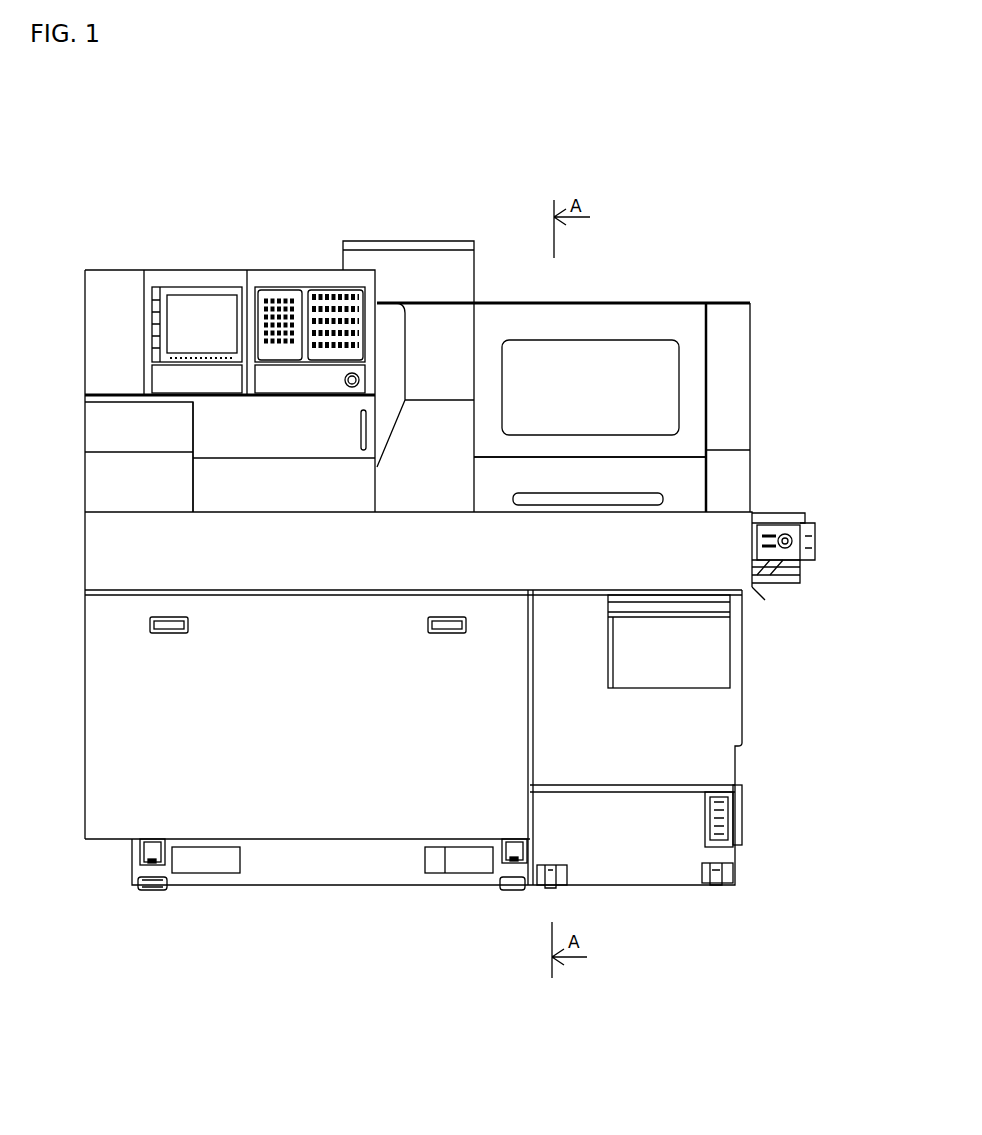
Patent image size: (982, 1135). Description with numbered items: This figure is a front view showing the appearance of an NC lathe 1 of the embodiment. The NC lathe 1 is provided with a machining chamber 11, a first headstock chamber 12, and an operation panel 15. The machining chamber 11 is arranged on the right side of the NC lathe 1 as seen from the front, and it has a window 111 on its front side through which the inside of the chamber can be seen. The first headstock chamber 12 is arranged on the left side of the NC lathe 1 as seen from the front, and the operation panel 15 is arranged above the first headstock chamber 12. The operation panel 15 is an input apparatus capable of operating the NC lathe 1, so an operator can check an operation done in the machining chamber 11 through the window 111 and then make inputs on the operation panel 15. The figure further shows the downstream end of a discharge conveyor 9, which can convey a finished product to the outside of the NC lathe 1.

The NC lathe 1 is at (780, 297).
The machining chamber 11 is at (612, 305).
The window 111 is at (673, 387).
The first headstock chamber 12 is at (200, 490).
The operation panel 15 is at (322, 287).
The discharge conveyor 9 is at (815, 530).